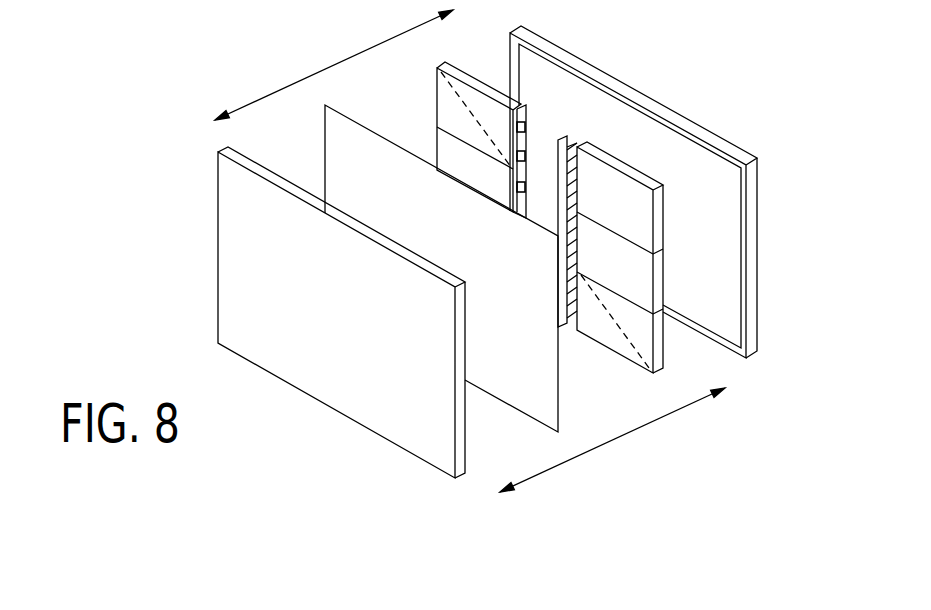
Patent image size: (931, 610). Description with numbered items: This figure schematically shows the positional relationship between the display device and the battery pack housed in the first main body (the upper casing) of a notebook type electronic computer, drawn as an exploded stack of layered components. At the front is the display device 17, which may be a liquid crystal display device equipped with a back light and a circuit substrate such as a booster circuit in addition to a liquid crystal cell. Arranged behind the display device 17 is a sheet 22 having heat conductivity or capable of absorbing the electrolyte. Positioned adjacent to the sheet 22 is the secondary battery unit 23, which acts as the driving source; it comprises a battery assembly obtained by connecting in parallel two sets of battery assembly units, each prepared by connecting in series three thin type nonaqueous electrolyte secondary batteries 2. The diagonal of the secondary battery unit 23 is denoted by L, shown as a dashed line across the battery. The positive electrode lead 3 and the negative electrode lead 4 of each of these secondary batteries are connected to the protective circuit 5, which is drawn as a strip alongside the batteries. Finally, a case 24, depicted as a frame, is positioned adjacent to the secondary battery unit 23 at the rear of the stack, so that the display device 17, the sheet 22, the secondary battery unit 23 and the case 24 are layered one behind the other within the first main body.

The thin type nonaqueous electrolyte secondary battery 2 is at (449, 116).
The positive electrode lead 3 is at (556, 150).
The negative electrode lead 4 is at (527, 121).
The protective circuit 5 is at (611, 236).
The display device 17 is at (230, 235).
The sheet 22 is at (333, 128).
The secondary battery unit 23 is at (428, 122).
The case 24 is at (751, 212).
The diagonal of the secondary battery unit L is at (621, 338).